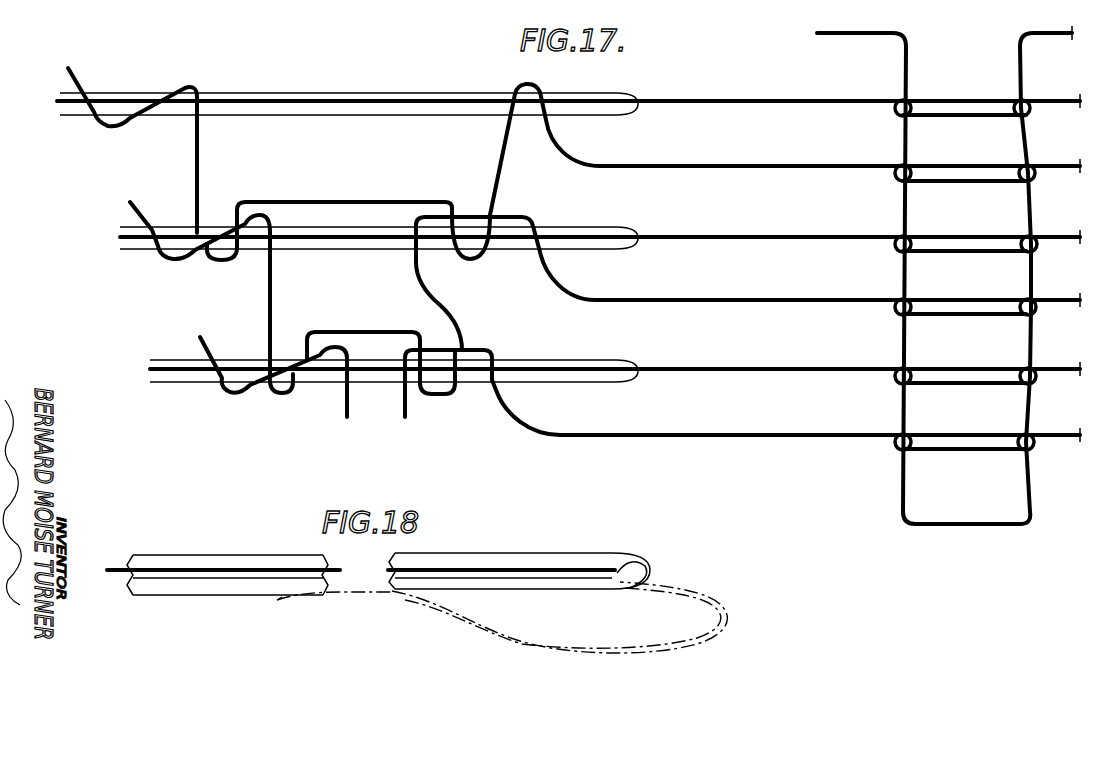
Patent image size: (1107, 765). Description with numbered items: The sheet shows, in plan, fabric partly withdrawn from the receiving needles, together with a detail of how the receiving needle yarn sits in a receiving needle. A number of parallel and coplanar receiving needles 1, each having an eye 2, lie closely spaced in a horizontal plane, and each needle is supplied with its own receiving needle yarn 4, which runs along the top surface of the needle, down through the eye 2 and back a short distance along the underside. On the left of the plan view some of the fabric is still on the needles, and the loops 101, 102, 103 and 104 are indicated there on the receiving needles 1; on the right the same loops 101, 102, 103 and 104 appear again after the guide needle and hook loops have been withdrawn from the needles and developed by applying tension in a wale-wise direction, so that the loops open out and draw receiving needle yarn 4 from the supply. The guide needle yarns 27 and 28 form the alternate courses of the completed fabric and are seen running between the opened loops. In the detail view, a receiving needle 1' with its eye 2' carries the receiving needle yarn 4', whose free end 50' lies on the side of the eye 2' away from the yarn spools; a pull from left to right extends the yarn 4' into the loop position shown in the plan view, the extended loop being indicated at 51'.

In FIG. 17, the receiving needle 1 is at (568, 240).
In FIG. 17, the eye 2 is at (643, 220).
In FIG. 17, the receiving needle yarn 4 is at (397, 218).
In FIG. 17, the guide needle yarn 27 is at (746, 166).
In FIG. 17, the guide needle yarn 28 is at (744, 300).
In FIG. 17, the loop 101 is at (230, 262).
In FIG. 17, the loop 102 is at (268, 214).
In FIG. 17, the loop 103 is at (466, 216).
In FIG. 17, the loop 104 is at (490, 225).
In FIG. 18, the receiving needle 1' is at (361, 550).
In FIG. 18, the eye 2' is at (642, 562).
In FIG. 18, the receiving needle yarn 4' is at (369, 587).
In FIG. 18, the free end 50' is at (334, 609).
In FIG. 18, the loop strand 51' is at (559, 626).